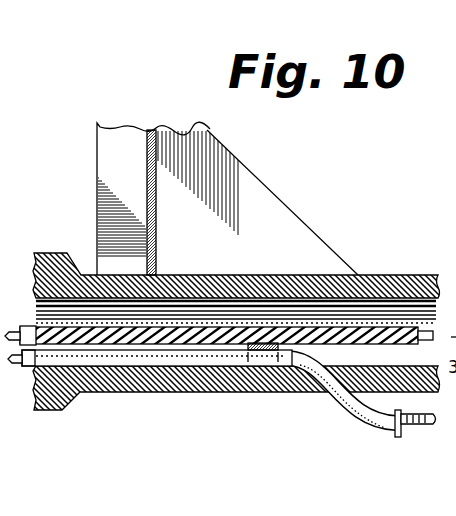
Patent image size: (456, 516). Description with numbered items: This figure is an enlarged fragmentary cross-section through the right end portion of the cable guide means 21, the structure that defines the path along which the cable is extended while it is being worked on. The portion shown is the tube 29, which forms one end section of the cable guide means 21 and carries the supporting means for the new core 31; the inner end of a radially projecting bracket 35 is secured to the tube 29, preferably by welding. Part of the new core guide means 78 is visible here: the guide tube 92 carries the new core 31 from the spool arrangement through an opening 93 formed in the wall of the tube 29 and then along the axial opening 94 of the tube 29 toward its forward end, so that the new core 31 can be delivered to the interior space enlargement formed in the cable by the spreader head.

The cable guide means 21 is at (75, 250).
The radially projecting bracket 35 is at (117, 150).
The axial opening 94 is at (371, 318).
The tube 29 is at (246, 387).
The opening 93 is at (313, 382).
The new core guide means 78 is at (111, 363).
The guide tube 92 is at (192, 362).
The new core 31 is at (425, 425).